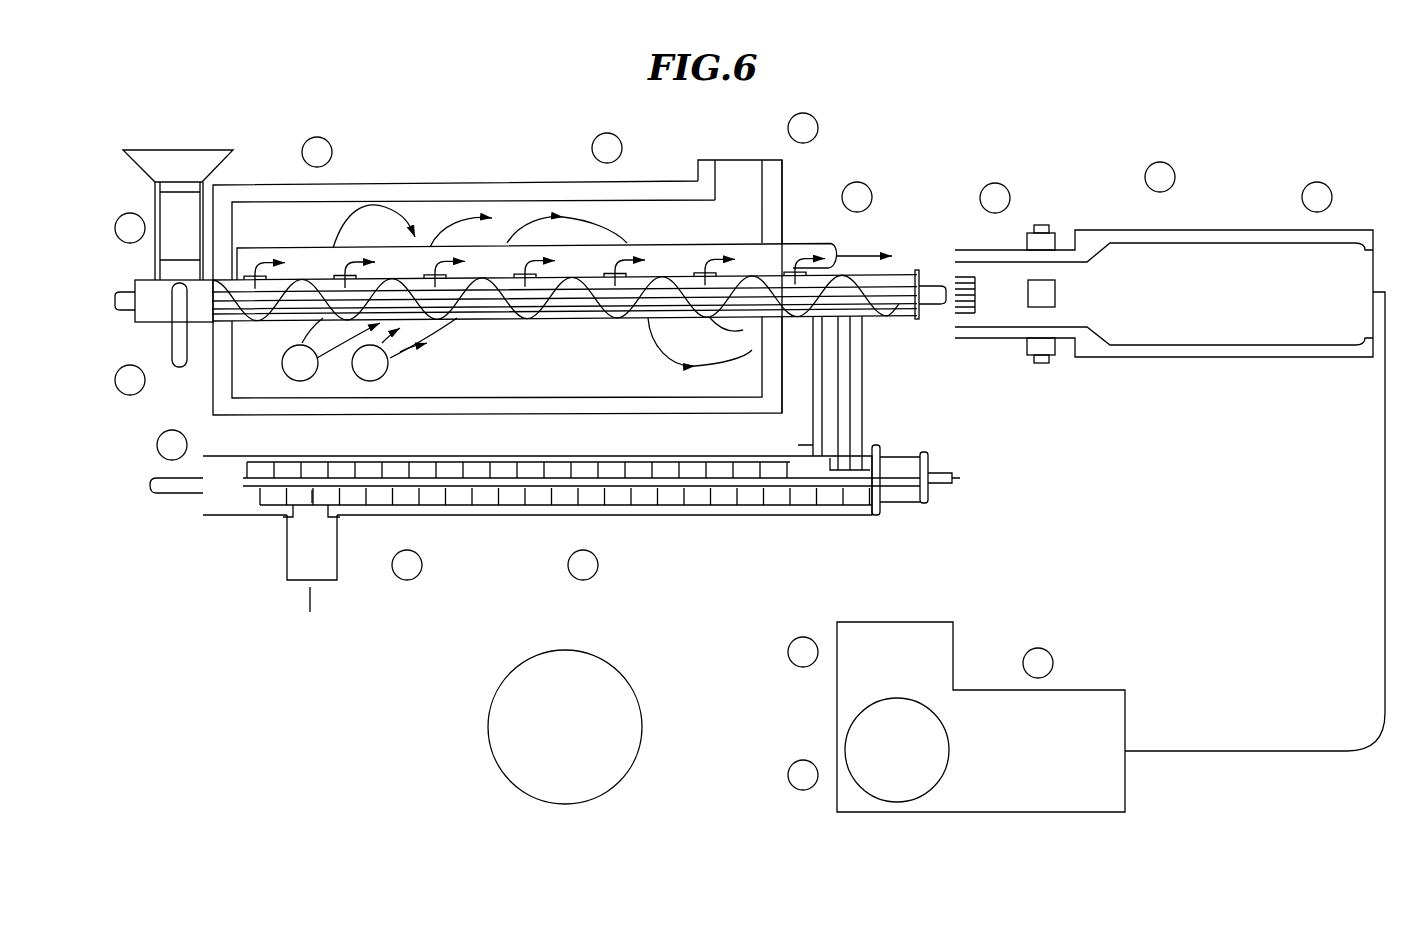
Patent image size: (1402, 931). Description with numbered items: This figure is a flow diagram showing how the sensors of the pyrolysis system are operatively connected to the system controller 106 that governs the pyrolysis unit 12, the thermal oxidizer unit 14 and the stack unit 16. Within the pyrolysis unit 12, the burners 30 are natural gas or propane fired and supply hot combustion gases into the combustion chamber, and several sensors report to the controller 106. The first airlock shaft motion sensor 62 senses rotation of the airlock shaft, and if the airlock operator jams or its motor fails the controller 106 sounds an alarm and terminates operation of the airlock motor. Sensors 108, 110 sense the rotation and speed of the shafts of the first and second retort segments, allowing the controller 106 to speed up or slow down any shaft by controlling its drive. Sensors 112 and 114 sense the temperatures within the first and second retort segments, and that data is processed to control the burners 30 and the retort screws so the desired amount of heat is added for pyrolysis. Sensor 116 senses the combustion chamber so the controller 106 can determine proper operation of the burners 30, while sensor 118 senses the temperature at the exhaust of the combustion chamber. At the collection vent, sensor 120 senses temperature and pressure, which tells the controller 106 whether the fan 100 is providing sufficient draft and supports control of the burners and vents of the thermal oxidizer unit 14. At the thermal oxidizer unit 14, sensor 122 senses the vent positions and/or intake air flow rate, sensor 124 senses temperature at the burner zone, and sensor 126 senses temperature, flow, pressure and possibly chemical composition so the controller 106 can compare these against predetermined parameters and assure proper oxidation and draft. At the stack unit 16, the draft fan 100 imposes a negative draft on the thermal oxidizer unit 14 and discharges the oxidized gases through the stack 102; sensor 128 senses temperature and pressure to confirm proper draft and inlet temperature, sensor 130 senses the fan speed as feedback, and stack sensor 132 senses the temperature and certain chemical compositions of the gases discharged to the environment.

The pyrolysis unit 12 is at (430, 157).
The thermal oxidizer unit 14 is at (1208, 370).
The stack unit 16 is at (1111, 552).
The burners 30 is at (382, 366).
The first airlock shaft motion sensor 62 is at (130, 213).
The draft blower or fan 100 is at (897, 750).
The stack 102 is at (953, 640).
The system controller 106 is at (565, 727).
The sensor 108 is at (140, 391).
The sensor 110 is at (187, 442).
The sensor 112 is at (320, 137).
The sensor 114 is at (583, 580).
The sensor 116 is at (607, 133).
The sensor 118 is at (815, 118).
The sensor 120 is at (862, 182).
The sensor 122 is at (1000, 183).
The sensor 124 is at (1160, 162).
The sensor 126 is at (1317, 182).
The sensor 128 is at (1050, 652).
The sensor 130 is at (800, 760).
The stack sensor 132 is at (800, 637).